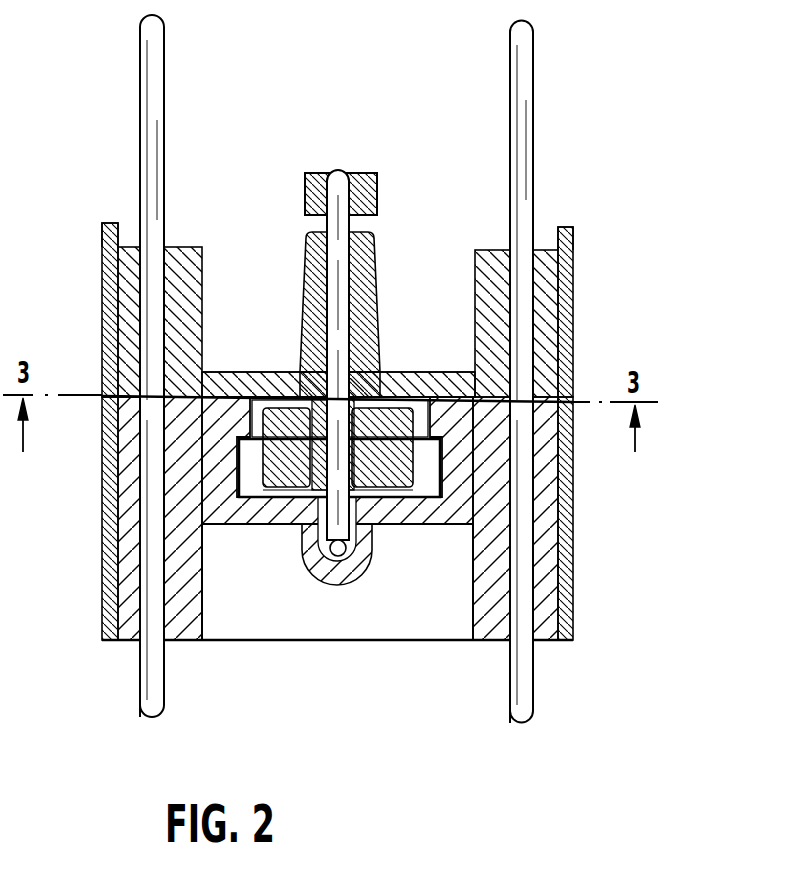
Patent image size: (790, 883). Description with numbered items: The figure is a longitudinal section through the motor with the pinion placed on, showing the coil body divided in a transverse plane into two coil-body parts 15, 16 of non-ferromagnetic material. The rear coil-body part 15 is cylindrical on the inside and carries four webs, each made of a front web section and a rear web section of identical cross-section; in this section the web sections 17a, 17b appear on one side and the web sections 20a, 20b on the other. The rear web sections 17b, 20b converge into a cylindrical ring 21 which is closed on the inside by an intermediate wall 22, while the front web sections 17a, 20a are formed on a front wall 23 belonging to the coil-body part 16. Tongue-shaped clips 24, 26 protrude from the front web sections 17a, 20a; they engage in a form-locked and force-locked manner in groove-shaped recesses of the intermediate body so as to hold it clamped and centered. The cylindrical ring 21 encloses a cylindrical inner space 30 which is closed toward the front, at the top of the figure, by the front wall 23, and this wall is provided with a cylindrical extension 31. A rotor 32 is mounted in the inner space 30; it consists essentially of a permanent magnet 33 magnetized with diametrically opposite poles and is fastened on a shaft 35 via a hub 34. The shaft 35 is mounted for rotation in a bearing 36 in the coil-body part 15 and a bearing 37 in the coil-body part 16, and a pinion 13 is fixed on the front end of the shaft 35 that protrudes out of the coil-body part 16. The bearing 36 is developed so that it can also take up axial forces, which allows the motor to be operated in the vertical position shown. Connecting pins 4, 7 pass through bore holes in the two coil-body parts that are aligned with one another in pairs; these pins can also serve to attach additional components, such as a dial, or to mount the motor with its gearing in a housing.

The connecting pin 4 is at (148, 92).
The connecting pin 7 is at (516, 112).
The pinion 13 is at (378, 193).
The coil-body part 15 is at (363, 641).
The coil-body part 16 is at (379, 371).
The front web section 17a is at (113, 282).
The rear web section 17b is at (117, 512).
The front web section 20a is at (556, 290).
The rear web section 20b is at (556, 510).
The cylindrical ring 21 is at (462, 503).
The intermediate wall 22 is at (372, 530).
The front wall 23 is at (237, 385).
The tongue-shaped clip 24 is at (103, 240).
The tongue-shaped clip 26 is at (575, 234).
The cylindrical inner space 30 is at (425, 503).
The cylindrical extension 31 is at (418, 397).
The rotor 32 is at (263, 500).
The permanent magnet 33 is at (240, 500).
The hub 34 is at (287, 500).
The shaft 35 is at (318, 226).
The bearing 36 is at (337, 560).
The bearing 37 is at (373, 248).